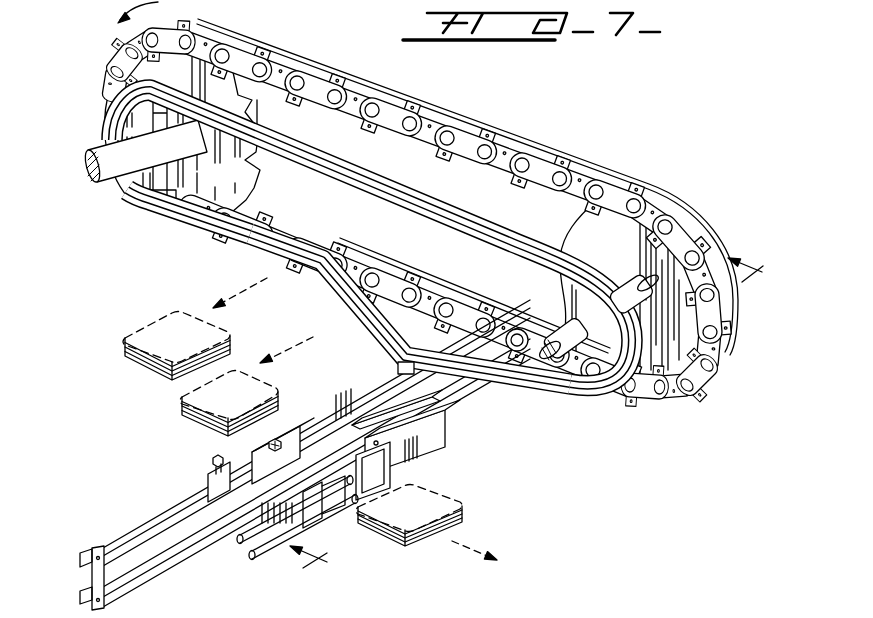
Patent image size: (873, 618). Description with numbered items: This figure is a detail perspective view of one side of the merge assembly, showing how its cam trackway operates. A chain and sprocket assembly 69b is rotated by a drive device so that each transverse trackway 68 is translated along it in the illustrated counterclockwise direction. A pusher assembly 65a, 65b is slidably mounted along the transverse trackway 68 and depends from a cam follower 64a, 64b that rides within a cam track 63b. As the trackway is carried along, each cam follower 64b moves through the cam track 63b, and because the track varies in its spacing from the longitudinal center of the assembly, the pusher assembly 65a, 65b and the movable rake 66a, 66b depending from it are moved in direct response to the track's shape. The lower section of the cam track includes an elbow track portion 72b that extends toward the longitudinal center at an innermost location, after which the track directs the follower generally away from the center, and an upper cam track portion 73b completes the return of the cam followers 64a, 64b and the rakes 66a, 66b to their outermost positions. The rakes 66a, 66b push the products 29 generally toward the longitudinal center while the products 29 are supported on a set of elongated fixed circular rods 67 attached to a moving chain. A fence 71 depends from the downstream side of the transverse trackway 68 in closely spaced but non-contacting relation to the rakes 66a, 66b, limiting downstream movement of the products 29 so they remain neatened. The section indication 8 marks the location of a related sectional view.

The chain and sprocket assembly 69b is at (558, 163).
The upper cam track portion 73b is at (410, 207).
The elbow track portion 72b is at (383, 342).
The cam track 63b is at (180, 214).
The cam follower 64b is at (407, 357).
The cam follower 64a is at (216, 470).
The pusher assembly 65a is at (250, 455).
The pusher assembly 65b is at (410, 406).
The fence 71 is at (437, 436).
The movable rake 66a is at (322, 522).
The movable rake 66b is at (380, 490).
The elongated fixed circular rods 67 is at (262, 545).
The transverse trackway 68 is at (127, 535).
The products 29 is at (182, 345).
The section line 8 is at (526, 413).